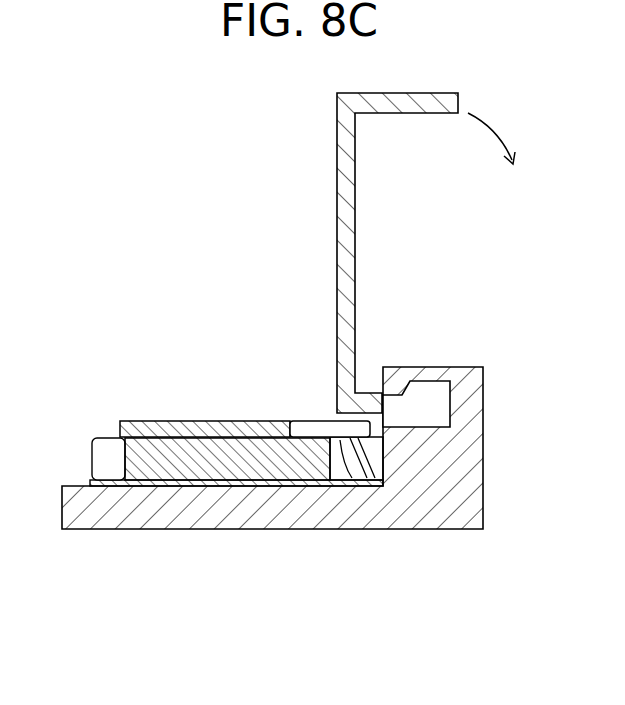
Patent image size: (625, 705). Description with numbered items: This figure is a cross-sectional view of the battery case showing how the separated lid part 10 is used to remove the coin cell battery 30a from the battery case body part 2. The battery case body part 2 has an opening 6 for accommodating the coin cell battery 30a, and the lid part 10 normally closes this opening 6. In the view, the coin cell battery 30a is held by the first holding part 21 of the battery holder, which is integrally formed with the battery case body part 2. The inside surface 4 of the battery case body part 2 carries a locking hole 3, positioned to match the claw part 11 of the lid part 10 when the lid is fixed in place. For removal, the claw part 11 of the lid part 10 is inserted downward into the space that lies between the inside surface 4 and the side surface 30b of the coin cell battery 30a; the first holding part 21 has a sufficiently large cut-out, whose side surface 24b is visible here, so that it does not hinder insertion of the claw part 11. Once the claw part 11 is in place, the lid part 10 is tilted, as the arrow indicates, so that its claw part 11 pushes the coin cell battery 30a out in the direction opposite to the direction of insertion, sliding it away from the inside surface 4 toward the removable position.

The battery case body part 2 is at (443, 463).
The locking hole 3 is at (432, 407).
The inside surface 4 is at (372, 382).
The opening 6 is at (81, 366).
The lid part 10 is at (350, 197).
The claw part 11 is at (352, 458).
The first holding part 21 is at (163, 420).
The side surface of cut-out part 24b is at (307, 420).
The coin cell battery 30a is at (165, 465).
The side surface of the coin cell battery 30b is at (343, 467).